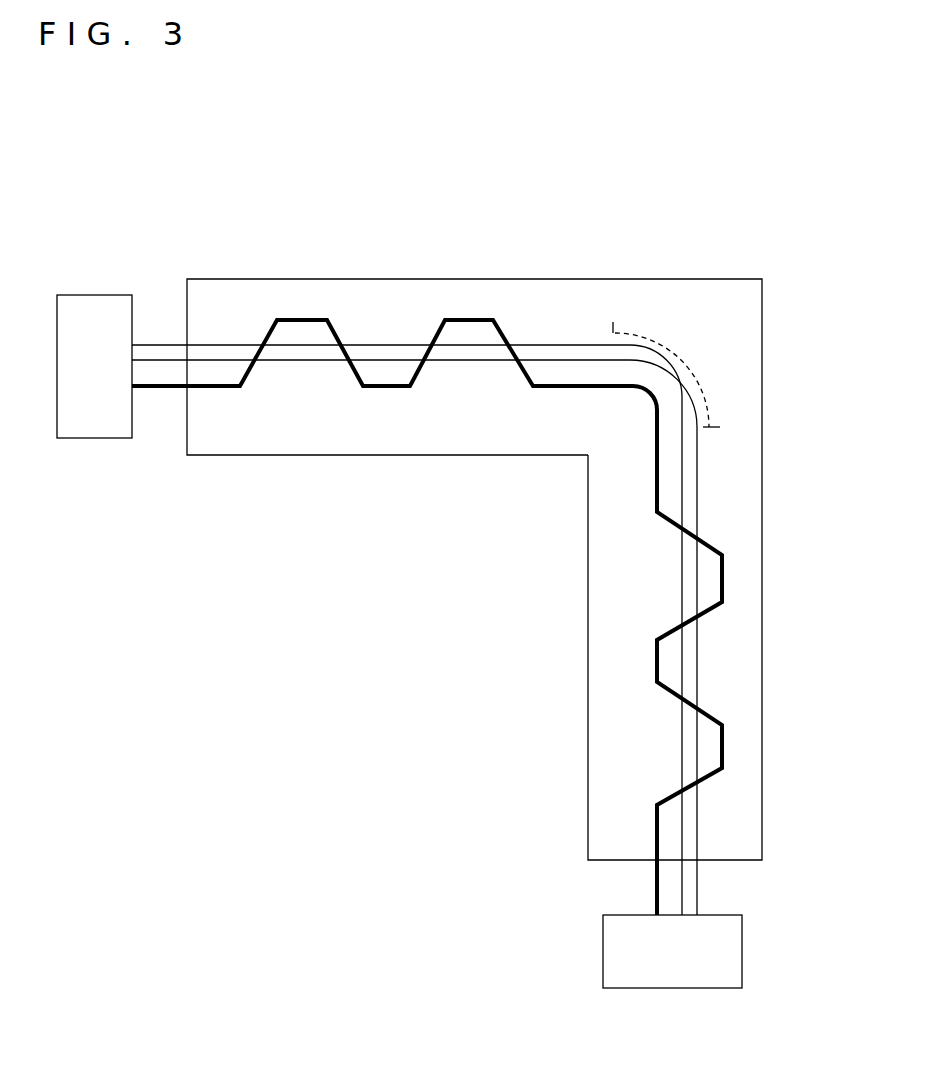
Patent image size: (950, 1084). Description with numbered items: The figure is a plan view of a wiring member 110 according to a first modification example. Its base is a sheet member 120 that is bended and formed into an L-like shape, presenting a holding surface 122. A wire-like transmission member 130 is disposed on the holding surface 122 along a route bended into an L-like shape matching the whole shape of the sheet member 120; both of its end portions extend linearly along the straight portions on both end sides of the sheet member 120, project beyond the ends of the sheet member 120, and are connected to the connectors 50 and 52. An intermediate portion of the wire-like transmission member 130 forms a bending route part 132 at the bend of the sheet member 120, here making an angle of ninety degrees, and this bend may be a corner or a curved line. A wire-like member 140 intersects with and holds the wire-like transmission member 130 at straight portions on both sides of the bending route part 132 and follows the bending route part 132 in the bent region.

The connector 50 is at (95, 293).
The connector 52 is at (742, 955).
The wiring member 110 is at (695, 212).
The sheet member 120 is at (474, 538).
The holding surface 122 is at (300, 298).
The wire-like transmission member 130 is at (568, 342).
The bending route part 132 is at (688, 361).
The wire-like member 140 is at (468, 322).